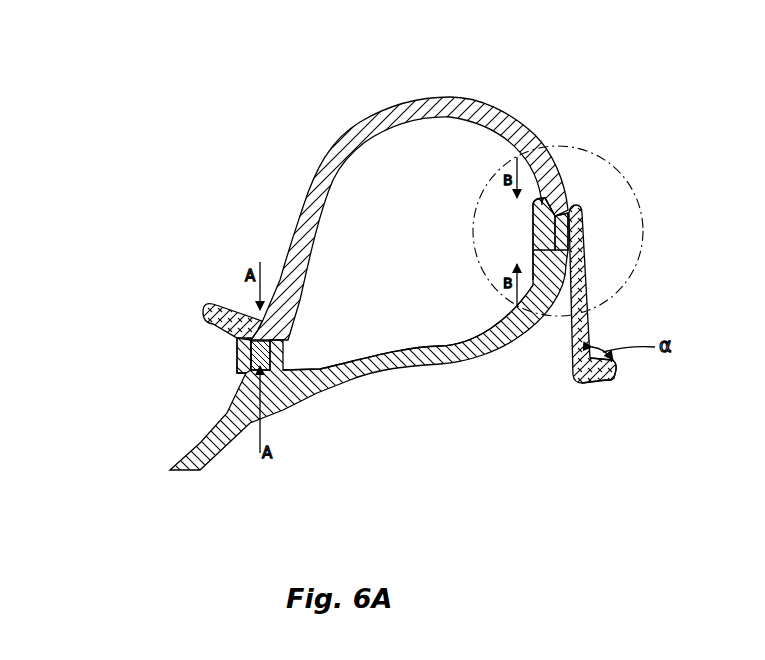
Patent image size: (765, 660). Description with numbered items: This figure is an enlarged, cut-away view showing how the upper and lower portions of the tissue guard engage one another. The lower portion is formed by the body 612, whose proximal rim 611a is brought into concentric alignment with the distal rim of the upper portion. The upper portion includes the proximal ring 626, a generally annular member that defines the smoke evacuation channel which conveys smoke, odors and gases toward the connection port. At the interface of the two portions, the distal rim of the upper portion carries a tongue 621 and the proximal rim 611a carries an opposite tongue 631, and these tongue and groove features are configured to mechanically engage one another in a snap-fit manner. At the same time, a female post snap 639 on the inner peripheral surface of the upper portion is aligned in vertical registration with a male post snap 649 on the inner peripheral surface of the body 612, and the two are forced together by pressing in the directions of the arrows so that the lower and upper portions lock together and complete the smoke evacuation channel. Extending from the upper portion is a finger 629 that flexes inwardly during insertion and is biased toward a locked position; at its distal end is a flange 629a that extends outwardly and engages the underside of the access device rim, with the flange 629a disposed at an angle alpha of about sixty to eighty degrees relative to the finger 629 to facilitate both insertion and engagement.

The body 612 is at (177, 395).
The proximal rim 611a is at (418, 320).
The proximal ring 626 is at (452, 97).
The tongue 631 is at (535, 217).
The tongue 621 is at (558, 235).
The finger 629 is at (588, 287).
The flange 629a is at (613, 380).
The female post snap 639 is at (237, 357).
The male post snap 649 is at (265, 353).